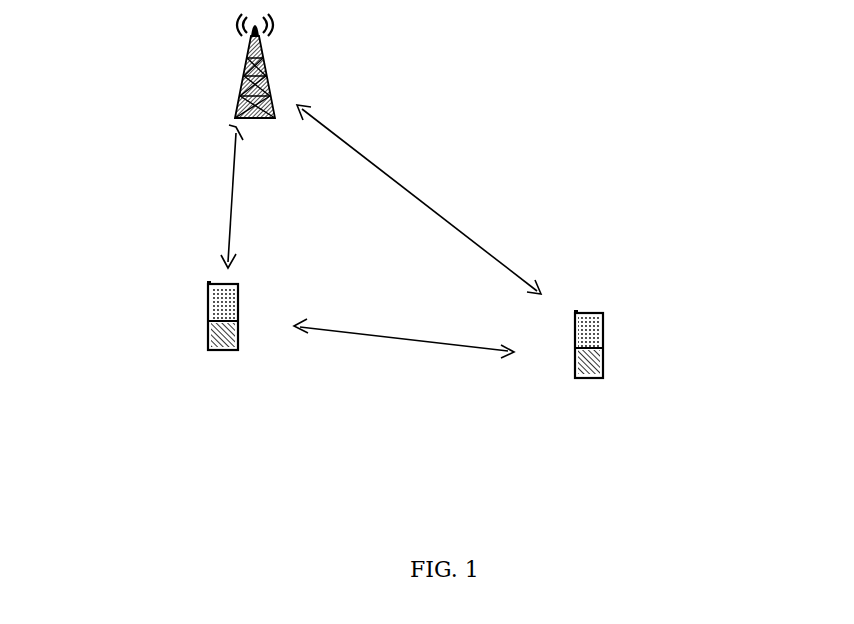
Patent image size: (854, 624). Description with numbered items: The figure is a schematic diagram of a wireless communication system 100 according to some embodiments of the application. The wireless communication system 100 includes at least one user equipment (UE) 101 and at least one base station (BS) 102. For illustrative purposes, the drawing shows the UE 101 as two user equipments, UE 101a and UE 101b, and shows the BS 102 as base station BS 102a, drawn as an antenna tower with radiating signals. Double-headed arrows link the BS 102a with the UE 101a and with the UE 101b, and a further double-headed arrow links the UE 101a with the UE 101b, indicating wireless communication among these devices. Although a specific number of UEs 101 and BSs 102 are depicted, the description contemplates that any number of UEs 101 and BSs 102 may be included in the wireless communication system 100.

The wireless communication system 100 is at (572, 68).
The user equipment 101 is at (633, 400).
The user equipment 101a is at (207, 325).
The user equipment 101b is at (605, 345).
The base station 102 is at (162, 55).
The base station 102a is at (238, 88).